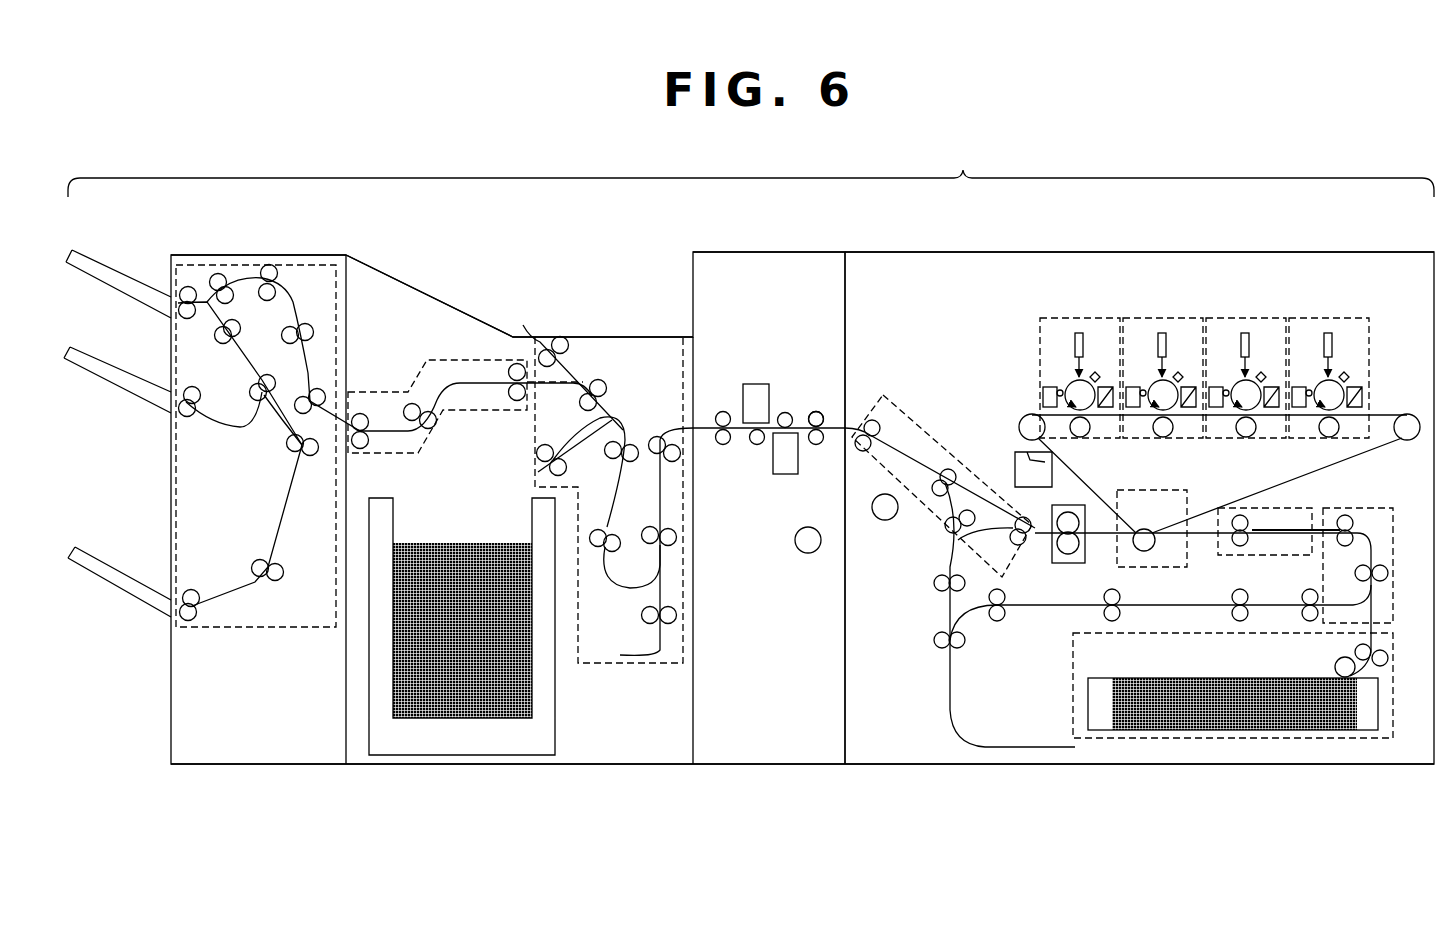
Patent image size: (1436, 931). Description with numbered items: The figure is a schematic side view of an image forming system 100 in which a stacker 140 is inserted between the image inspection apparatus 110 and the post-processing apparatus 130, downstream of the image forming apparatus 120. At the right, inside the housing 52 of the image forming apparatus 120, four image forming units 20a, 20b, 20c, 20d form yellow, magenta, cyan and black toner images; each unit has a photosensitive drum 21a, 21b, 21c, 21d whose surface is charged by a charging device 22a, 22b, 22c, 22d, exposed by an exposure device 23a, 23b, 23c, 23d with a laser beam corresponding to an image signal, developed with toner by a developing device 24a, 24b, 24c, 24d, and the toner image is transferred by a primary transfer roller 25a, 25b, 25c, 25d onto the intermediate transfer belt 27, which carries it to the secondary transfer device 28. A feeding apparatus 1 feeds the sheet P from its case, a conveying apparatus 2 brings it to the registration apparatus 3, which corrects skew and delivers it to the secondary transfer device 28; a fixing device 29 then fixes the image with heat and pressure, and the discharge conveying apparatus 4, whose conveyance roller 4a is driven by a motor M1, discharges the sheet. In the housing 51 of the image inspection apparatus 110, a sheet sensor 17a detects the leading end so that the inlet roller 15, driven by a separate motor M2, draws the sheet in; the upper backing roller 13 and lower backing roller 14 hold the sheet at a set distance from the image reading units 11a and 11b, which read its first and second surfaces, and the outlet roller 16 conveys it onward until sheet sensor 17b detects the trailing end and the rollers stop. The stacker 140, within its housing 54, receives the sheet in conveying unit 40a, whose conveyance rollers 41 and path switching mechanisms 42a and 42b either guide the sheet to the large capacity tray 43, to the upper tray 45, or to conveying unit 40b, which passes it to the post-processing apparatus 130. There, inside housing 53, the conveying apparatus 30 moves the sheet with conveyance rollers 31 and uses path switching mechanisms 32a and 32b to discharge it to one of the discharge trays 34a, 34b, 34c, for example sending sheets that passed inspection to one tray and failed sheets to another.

The image forming system 100 is at (751, 453).
The post-processing apparatus 130 is at (257, 255).
The image inspection apparatus 110 is at (768, 252).
The image forming apparatus 120 is at (990, 252).
The stacker 140 is at (645, 337).
The upper tray 45 is at (446, 302).
The discharge tray 34a is at (120, 276).
The discharge tray 34b is at (120, 371).
The discharge tray 34c is at (120, 573).
The conveyance rollers 31 is at (267, 300).
The path switching mechanism 32a is at (197, 325).
The path switching mechanism 32b is at (266, 428).
The conveying apparatus 30 is at (255, 628).
The housing 53 is at (255, 765).
The housing 54 is at (520, 765).
The housing 51 is at (770, 765).
The housing 52 is at (1140, 765).
The conveying unit 40b is at (388, 388).
The conveyance rollers 41 is at (516, 402).
The path switching mechanism 42a is at (608, 414).
The path switching mechanism 42b is at (570, 374).
The large capacity tray 43 is at (380, 498).
The conveying unit 40a is at (632, 662).
The sheet sensor 17b is at (709, 422).
The outlet roller 16 is at (723, 445).
The lower backing roller 14 is at (757, 445).
The upper backing roller 13 is at (785, 412).
The inlet roller 15 is at (814, 411).
The sheet sensor 17a is at (829, 414).
The image reading unit 11b is at (756, 384).
The image reading unit 11a is at (785, 475).
The motor M2 is at (808, 553).
The motor M1 is at (885, 520).
The discharge conveying apparatus 4 is at (914, 413).
The conveyance roller 4a is at (950, 473).
The fixing device 29 is at (1069, 564).
The secondary transfer device 28 is at (1120, 490).
The intermediate transfer belt 27 is at (1203, 506).
The image forming unit 20a is at (1083, 318).
The image forming unit 20b is at (1166, 318).
The image forming unit 20c is at (1249, 318).
The image forming unit 20d is at (1332, 318).
The photosensitive drum 21a is at (1075, 378).
The photosensitive drum 21b is at (1158, 378).
The photosensitive drum 21c is at (1241, 378).
The photosensitive drum 21d is at (1324, 378).
The charging device 22a is at (1099, 372).
The charging device 22b is at (1182, 372).
The charging device 22c is at (1265, 372).
The charging device 22d is at (1348, 372).
The exposure device 23a is at (1082, 333).
The exposure device 23b is at (1165, 333).
The exposure device 23c is at (1248, 333).
The exposure device 23d is at (1331, 333).
The developing device 24a is at (1048, 387).
The developing device 24b is at (1131, 387).
The developing device 24c is at (1214, 387).
The developing device 24d is at (1297, 387).
The primary transfer roller 25a is at (1081, 437).
The primary transfer roller 25b is at (1164, 437).
The primary transfer roller 25c is at (1247, 437).
The primary transfer roller 25d is at (1330, 437).
The registration apparatus 3 is at (1266, 556).
The sheet P is at (1300, 527).
The conveying apparatus 2 is at (1358, 508).
The feeding apparatus 1 is at (1394, 657).